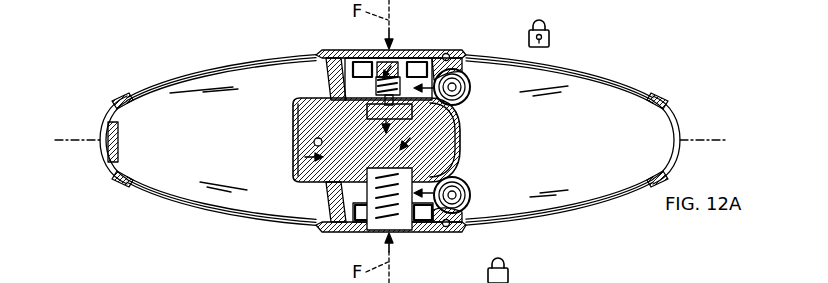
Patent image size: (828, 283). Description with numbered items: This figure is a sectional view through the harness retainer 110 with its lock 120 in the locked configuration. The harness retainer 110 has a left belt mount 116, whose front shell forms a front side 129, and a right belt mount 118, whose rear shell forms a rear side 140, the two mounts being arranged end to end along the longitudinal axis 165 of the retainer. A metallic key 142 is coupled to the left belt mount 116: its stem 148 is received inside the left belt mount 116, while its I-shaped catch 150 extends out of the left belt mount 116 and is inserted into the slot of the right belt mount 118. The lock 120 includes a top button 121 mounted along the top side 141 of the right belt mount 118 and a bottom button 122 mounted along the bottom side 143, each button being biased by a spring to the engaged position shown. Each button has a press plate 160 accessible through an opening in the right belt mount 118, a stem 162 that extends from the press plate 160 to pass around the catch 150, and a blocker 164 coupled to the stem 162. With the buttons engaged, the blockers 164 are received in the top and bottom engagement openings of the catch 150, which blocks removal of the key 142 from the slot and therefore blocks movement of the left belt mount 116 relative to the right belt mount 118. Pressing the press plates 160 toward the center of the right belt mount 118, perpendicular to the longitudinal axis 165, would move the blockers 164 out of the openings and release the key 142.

The harness retainer 110 is at (652, 37).
The left belt mount 116 is at (94, 84).
The right belt mount 118 is at (635, 215).
The lock 120 is at (436, 48).
The top button 121 is at (418, 49).
The bottom button 122 is at (359, 236).
The front side 129 is at (311, 52).
The rear side 140 is at (405, 272).
The top side 141 is at (599, 74).
The key 142 is at (294, 143).
The bottom side 143 is at (587, 215).
The stem 148 is at (292, 171).
The catch 150 is at (439, 134).
The press plate 160 is at (470, 89).
The stem 162 is at (462, 103).
The blocker 164 is at (392, 125).
The longitudinal axis 165 is at (62, 140).